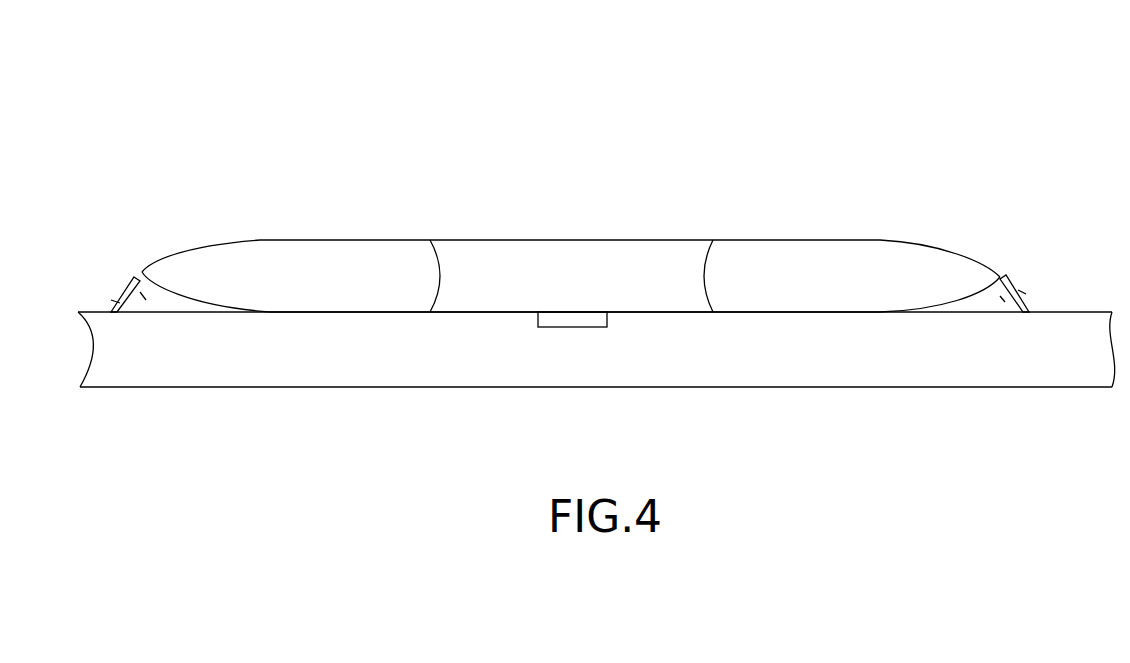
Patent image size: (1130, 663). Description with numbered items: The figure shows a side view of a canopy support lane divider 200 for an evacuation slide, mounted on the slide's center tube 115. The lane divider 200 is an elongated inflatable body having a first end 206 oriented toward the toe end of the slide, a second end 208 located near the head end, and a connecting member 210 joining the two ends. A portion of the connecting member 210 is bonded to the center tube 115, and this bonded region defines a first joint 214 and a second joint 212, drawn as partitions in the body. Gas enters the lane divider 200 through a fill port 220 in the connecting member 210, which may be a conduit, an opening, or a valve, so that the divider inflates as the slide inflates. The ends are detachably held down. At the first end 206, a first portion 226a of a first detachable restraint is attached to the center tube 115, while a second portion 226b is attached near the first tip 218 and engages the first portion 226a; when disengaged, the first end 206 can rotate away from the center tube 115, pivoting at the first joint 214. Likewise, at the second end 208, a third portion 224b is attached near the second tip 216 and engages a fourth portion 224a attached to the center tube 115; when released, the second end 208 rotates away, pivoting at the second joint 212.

The center tube 115 is at (302, 355).
The lane divider 200 is at (764, 86).
The first end 206 is at (318, 252).
The second end 208 is at (813, 247).
The connecting member 210 is at (620, 250).
The second joint 212 is at (705, 267).
The first joint 214 is at (440, 265).
The second tip 216 is at (978, 263).
The first tip 218 is at (138, 278).
The fill port 220 is at (550, 322).
The fourth portion 224a is at (1025, 294).
The third portion 224b is at (1001, 298).
The first portion 226a is at (120, 303).
The second portion 226b is at (143, 297).